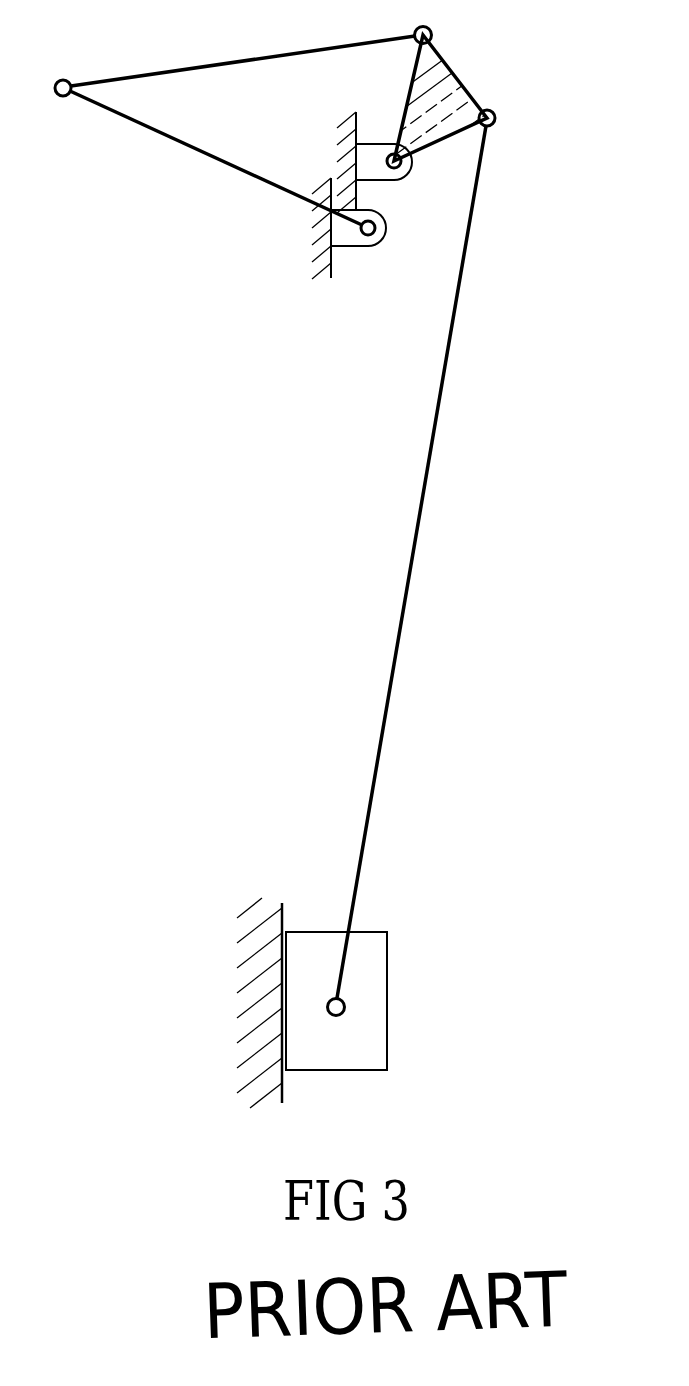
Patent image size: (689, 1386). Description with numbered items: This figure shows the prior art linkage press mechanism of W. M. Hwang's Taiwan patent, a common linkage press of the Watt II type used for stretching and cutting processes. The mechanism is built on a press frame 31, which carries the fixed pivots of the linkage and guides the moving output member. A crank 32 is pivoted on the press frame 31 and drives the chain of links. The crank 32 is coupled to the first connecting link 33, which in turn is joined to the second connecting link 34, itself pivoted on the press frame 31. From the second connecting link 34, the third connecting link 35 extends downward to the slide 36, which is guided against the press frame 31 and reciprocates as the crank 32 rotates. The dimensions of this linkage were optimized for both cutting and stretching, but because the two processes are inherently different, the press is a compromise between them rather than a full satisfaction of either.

The press frame 31 is at (233, 1003).
The crank 32 is at (216, 158).
The connecting link 1 33 is at (235, 49).
The connecting link 2 34 is at (456, 99).
The connecting link 3 35 is at (411, 562).
The slide 36 is at (370, 1001).